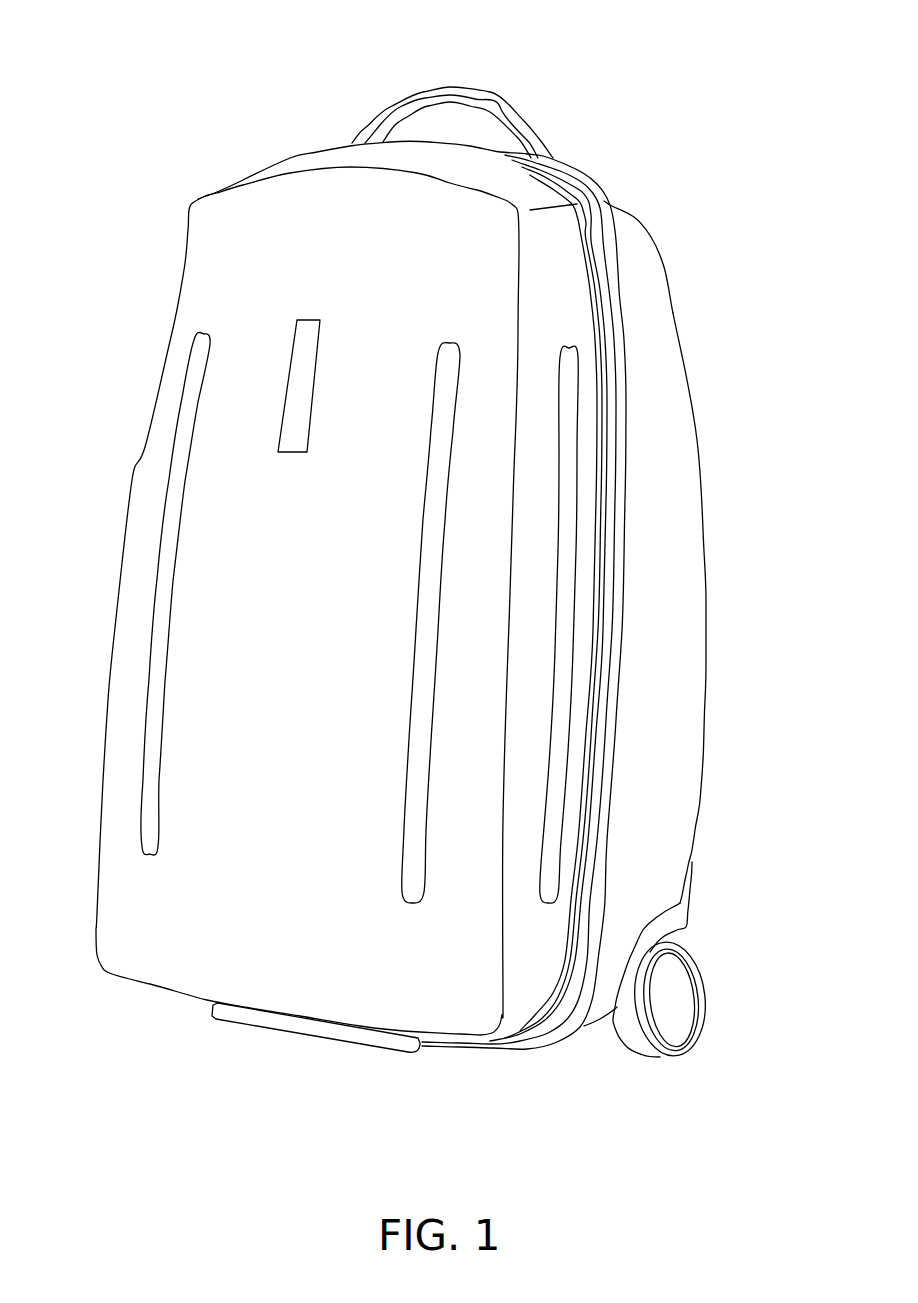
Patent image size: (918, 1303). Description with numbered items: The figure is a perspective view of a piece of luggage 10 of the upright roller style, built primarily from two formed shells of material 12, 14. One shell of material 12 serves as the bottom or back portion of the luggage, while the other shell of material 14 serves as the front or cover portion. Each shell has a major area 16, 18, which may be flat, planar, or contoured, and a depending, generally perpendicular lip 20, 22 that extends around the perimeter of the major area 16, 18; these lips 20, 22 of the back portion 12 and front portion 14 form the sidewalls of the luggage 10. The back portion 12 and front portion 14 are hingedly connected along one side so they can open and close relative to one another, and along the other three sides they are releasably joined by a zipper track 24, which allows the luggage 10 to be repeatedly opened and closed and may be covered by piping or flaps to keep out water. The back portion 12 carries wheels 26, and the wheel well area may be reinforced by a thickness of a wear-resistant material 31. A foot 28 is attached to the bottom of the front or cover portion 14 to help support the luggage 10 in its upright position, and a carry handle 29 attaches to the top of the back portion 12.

The piece of luggage 10 is at (620, 86).
The shell of material (back portion) 12 is at (664, 232).
The shell of material (front portion) 14 is at (158, 336).
The major area 16 is at (704, 528).
The major area 18 is at (150, 443).
The lip 20 is at (660, 410).
The lip 22 is at (577, 333).
The zipper track 24 is at (613, 302).
The wheels 26 is at (688, 1008).
The foot 28 is at (330, 1040).
The carry handle 29 is at (432, 88).
The wear-resistant material 31 is at (677, 913).